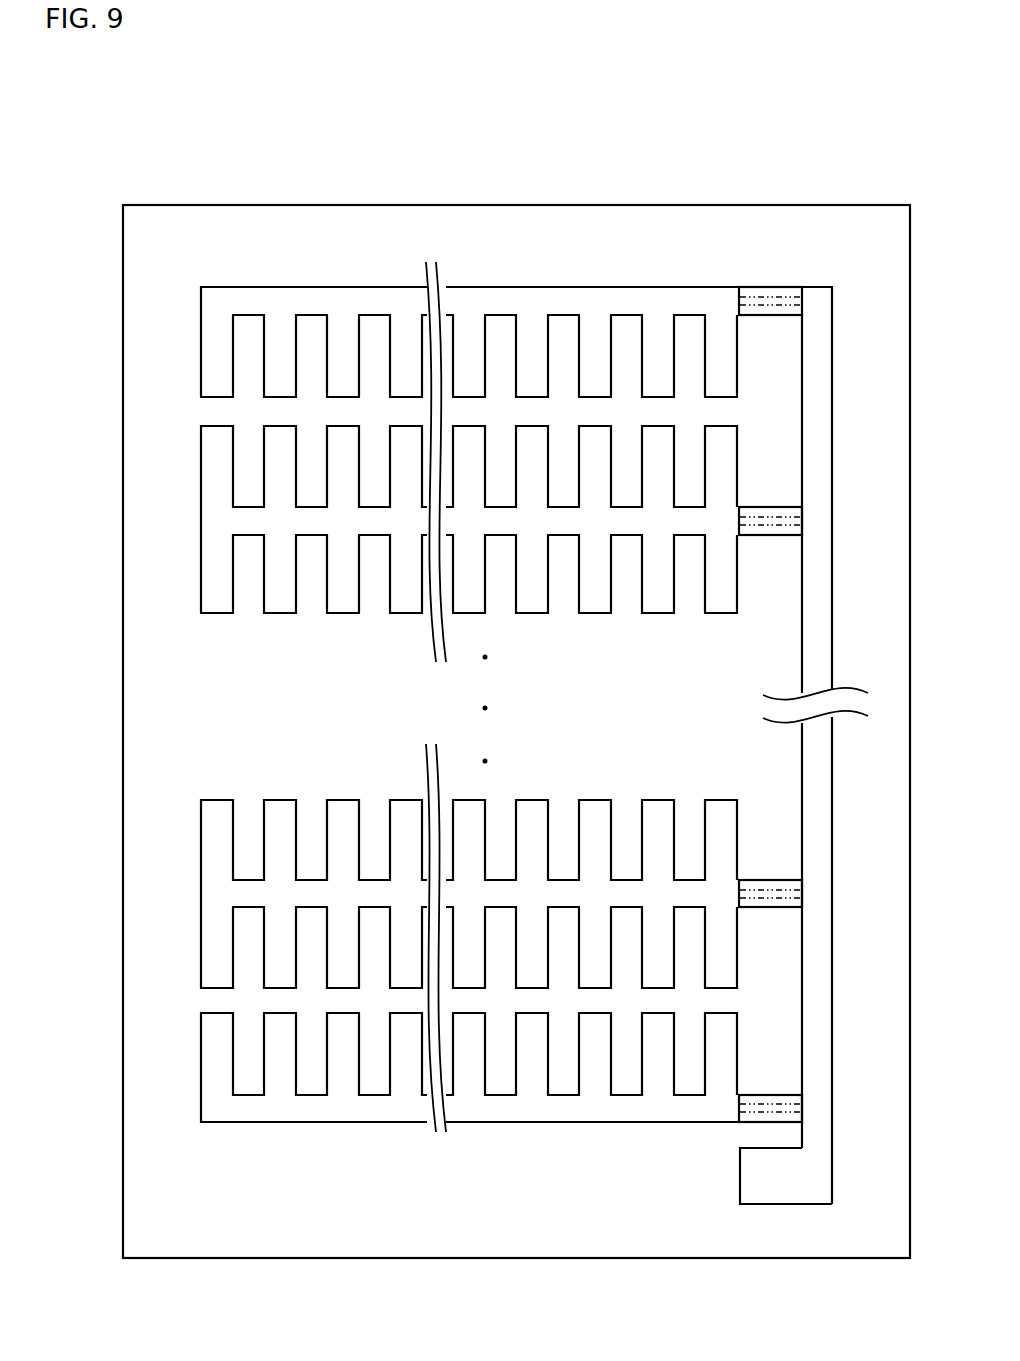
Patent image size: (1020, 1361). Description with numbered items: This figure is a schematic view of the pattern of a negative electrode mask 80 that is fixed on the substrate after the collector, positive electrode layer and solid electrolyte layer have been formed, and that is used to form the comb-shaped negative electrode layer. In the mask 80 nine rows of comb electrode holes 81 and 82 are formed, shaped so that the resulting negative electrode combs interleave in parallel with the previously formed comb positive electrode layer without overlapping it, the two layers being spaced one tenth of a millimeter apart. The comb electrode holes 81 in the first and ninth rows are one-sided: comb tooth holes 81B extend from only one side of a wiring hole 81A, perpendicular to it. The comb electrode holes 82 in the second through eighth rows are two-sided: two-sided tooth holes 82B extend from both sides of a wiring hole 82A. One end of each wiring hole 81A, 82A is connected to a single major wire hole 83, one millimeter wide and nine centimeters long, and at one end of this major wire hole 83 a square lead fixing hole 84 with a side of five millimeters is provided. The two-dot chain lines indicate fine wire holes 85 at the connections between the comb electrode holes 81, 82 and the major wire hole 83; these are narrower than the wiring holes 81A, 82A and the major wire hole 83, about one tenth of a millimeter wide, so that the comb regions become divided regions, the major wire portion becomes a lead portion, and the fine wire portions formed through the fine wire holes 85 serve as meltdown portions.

The negative electrode mask 80 is at (123, 633).
The comb electrode holes 81 is at (158, 102).
The wiring hole 81A is at (240, 300).
The comb tooth holes 81B is at (280, 360).
The comb electrode holes 82 is at (537, 108).
The wiring hole 82A is at (565, 500).
The two-sided tooth holes 82B is at (655, 430).
The major wire hole 83 is at (812, 420).
The lead fixing hole 84 is at (760, 1178).
The fine wire holes 85 is at (762, 297).